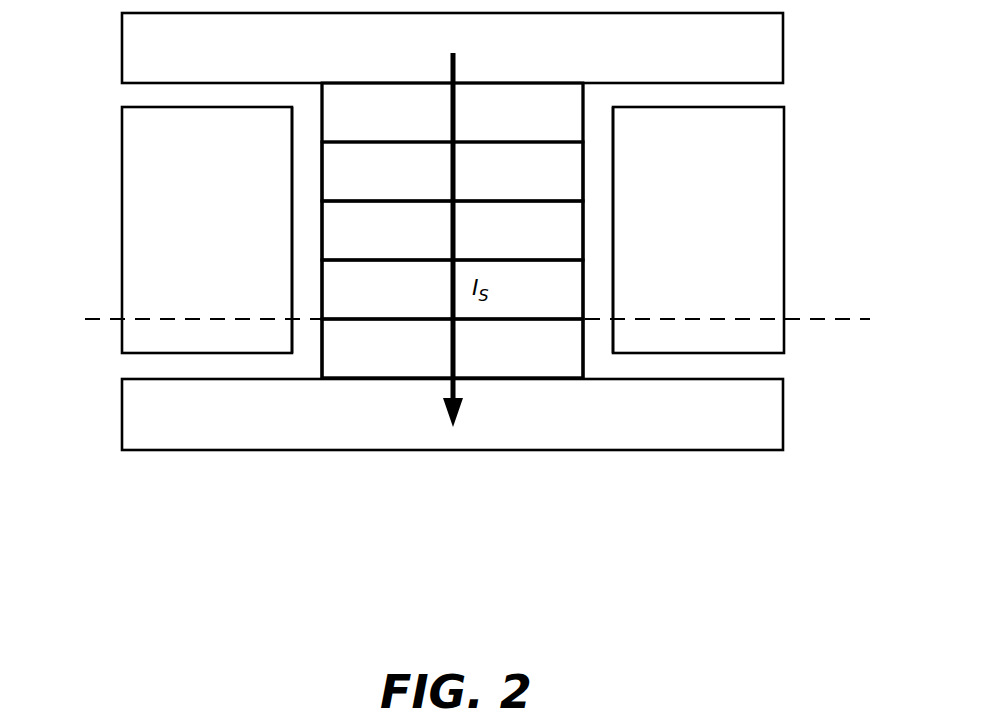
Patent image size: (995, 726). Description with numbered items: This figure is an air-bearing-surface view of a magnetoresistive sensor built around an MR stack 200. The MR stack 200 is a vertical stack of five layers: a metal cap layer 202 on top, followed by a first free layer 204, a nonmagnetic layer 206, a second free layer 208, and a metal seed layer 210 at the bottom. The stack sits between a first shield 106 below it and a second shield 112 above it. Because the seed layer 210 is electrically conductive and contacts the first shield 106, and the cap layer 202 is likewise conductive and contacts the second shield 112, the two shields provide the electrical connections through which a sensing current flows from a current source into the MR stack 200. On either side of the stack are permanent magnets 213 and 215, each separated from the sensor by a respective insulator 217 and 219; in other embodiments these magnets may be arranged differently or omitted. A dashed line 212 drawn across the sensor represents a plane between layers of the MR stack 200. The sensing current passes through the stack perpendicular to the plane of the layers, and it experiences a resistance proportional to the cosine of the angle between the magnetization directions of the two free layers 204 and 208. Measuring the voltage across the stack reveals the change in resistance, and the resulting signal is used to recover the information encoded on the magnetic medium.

The second shield 112 is at (452, 48).
The first shield 106 is at (452, 414).
The MR stack 200 is at (306, 100).
The metal cap layer 202 is at (452, 112).
The first free layer 204 is at (452, 171).
The nonmagnetic layer 206 is at (452, 230).
The second free layer 208 is at (452, 289).
The metal seed layer 210 is at (452, 348).
The dashed line 212 is at (807, 318).
The permanent magnet 213 is at (207, 230).
The permanent magnet 215 is at (698, 230).
The insulator 217 is at (298, 230).
The insulator 219 is at (606, 230).